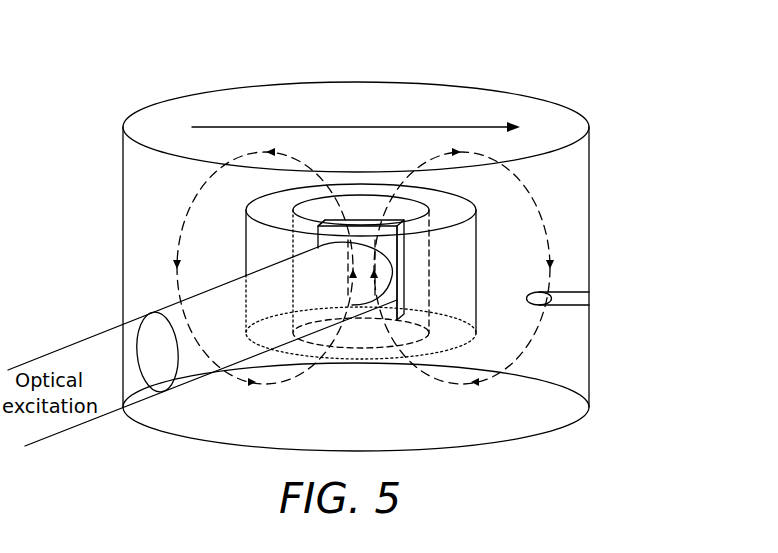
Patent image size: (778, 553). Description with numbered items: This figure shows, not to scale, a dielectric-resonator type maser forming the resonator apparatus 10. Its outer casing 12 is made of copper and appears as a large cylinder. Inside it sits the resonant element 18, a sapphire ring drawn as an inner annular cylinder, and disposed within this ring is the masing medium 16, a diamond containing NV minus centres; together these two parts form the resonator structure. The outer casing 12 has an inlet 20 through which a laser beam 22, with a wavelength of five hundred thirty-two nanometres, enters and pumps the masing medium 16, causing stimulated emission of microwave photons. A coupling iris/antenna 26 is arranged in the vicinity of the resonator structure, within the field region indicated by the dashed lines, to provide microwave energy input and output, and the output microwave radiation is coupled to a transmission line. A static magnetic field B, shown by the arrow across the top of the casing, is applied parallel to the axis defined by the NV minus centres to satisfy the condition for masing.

The resonator apparatus 10 is at (538, 63).
The outer casing 12 is at (200, 93).
The masing medium 16 is at (404, 268).
The resonant element 18 is at (318, 249).
The inlet 20 is at (128, 323).
The laser beam 22 is at (73, 427).
The coupling iris/antenna 26 is at (592, 302).